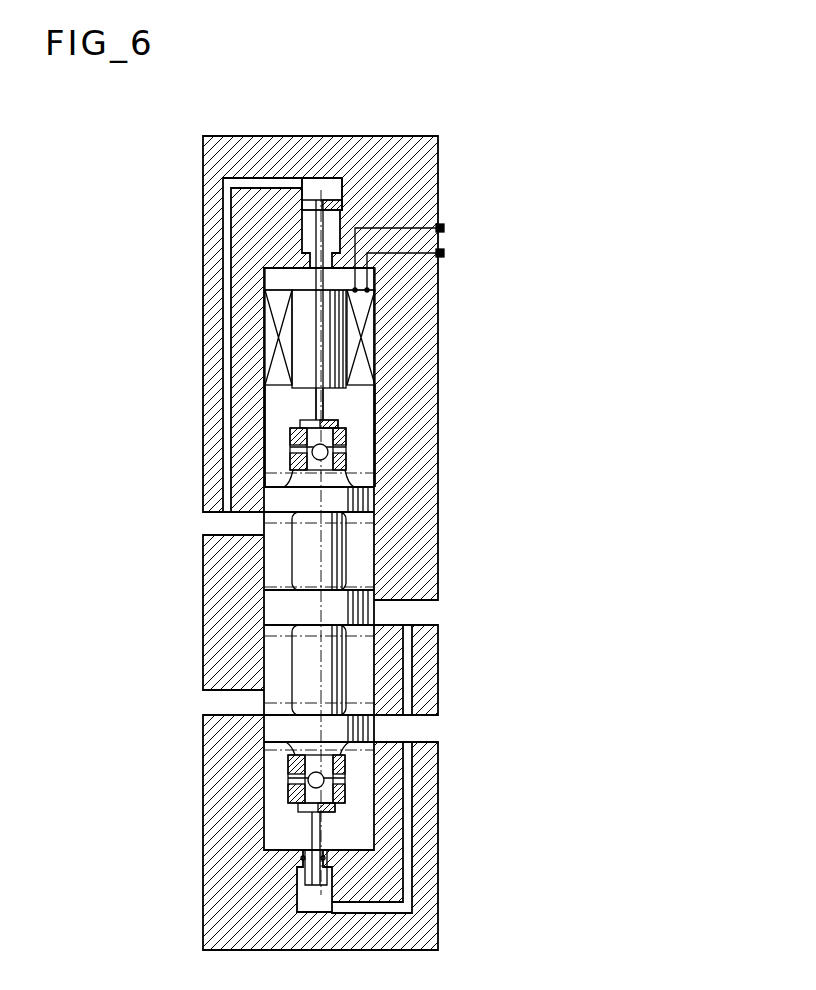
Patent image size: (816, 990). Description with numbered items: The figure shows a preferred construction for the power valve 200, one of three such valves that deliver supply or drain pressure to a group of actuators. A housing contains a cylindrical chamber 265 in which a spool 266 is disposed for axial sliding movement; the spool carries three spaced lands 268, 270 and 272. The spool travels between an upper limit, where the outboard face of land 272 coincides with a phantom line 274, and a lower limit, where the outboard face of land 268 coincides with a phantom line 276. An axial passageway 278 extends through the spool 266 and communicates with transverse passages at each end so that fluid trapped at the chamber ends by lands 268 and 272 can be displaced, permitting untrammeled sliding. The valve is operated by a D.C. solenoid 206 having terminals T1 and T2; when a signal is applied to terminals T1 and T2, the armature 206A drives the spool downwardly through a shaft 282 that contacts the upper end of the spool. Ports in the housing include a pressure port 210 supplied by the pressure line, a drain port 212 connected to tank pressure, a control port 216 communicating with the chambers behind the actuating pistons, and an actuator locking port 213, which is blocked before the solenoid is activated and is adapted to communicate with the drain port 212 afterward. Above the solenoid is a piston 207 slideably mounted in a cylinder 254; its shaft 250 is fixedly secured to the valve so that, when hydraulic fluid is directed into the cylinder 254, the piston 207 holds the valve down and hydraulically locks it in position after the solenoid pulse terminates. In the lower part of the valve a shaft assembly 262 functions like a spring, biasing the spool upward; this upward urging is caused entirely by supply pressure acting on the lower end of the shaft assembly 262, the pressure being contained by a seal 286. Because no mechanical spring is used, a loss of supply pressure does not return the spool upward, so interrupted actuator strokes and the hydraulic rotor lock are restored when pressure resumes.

The power valve 200 is at (482, 290).
The D.C. solenoid 206 is at (372, 322).
The armature 206A is at (332, 347).
The piston 207 is at (345, 188).
The pressure port 210 is at (425, 612).
The drain port 212 is at (413, 508).
The actuator locking port 213 is at (212, 700).
The control port 216 is at (212, 522).
The shaft 250 is at (320, 227).
The cylinder 254 is at (328, 198).
The shaft assembly 262 is at (312, 824).
The cylindrical chamber 265 is at (270, 657).
The spool 266 is at (300, 567).
The land 268 is at (270, 725).
The land 270 is at (275, 612).
The land 272 is at (373, 497).
The phantom line 274 is at (352, 474).
The phantom line 276 is at (408, 780).
The axial passageway 278 is at (335, 458).
The shaft 282 is at (324, 407).
The seal 286 is at (303, 860).
The terminal T1 is at (446, 229).
The terminal T2 is at (446, 255).